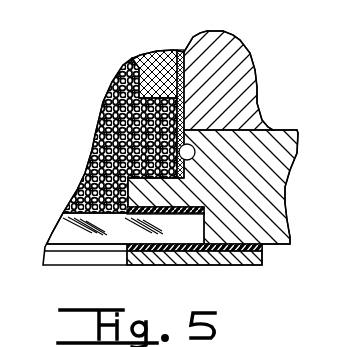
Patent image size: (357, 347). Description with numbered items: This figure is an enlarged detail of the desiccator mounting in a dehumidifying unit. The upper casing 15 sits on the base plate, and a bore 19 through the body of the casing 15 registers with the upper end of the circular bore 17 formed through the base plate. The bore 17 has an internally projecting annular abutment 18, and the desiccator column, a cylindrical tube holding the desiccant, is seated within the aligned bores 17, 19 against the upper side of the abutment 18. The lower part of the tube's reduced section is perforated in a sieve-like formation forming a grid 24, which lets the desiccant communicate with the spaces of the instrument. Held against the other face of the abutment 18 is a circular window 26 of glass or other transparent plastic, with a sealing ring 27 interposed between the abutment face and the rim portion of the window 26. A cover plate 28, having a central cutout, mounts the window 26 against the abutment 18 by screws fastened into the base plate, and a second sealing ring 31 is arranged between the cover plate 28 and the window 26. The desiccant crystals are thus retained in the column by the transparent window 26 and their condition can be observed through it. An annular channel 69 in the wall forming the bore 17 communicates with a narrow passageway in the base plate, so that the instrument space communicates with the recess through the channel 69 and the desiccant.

The upper casing 15 is at (240, 78).
The circular bore 17 is at (184, 170).
The annular abutment 18 is at (78, 192).
The bore 19 is at (185, 63).
The grid 24 is at (153, 68).
The circular window 26 is at (62, 230).
The sealing ring 27 is at (206, 210).
The cover plate 28 is at (250, 263).
The sealing ring 31 is at (263, 248).
The annular channel 69 is at (195, 152).